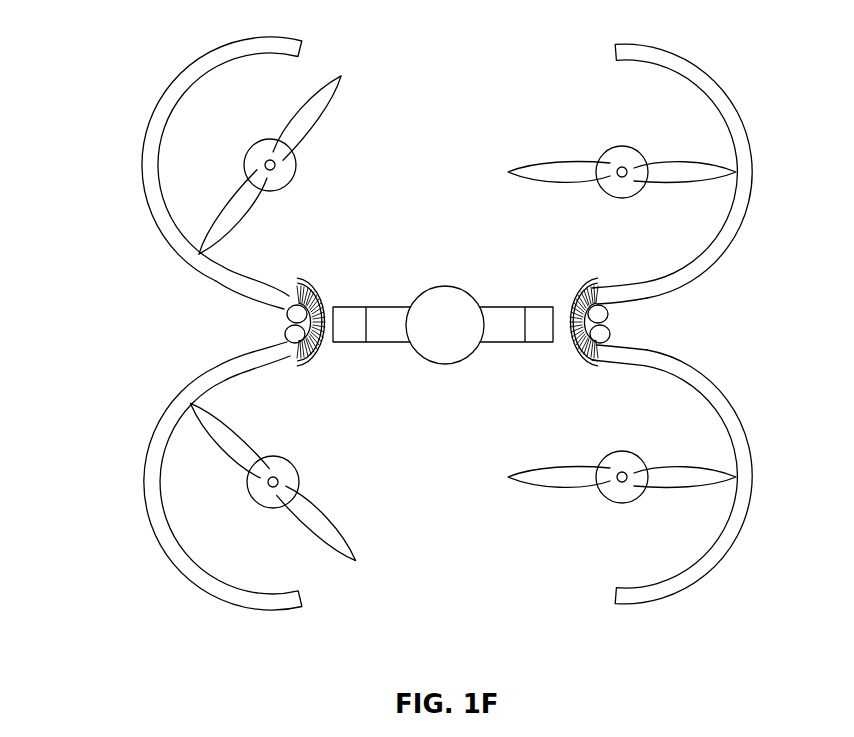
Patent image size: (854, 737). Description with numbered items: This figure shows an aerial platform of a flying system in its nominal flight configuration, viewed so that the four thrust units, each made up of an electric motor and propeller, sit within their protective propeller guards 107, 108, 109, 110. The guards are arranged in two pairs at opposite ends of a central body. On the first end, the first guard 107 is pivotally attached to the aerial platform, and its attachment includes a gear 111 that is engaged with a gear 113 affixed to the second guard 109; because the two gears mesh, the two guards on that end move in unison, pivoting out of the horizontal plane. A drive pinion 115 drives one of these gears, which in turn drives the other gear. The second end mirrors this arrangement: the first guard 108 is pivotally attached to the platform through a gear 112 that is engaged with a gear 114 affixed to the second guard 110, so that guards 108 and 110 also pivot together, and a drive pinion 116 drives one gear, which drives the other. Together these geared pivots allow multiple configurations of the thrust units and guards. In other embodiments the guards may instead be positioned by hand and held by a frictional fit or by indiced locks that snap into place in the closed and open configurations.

The propeller guard 107 is at (155, 417).
The propeller guard 108 is at (688, 55).
The propeller guard 109 is at (173, 80).
The propeller guard 110 is at (707, 370).
The gear 111 is at (290, 343).
The gear 112 is at (577, 288).
The gear 113 is at (288, 302).
The gear 114 is at (566, 350).
The drive pinion 115 is at (330, 323).
The drive pinion 116 is at (557, 308).